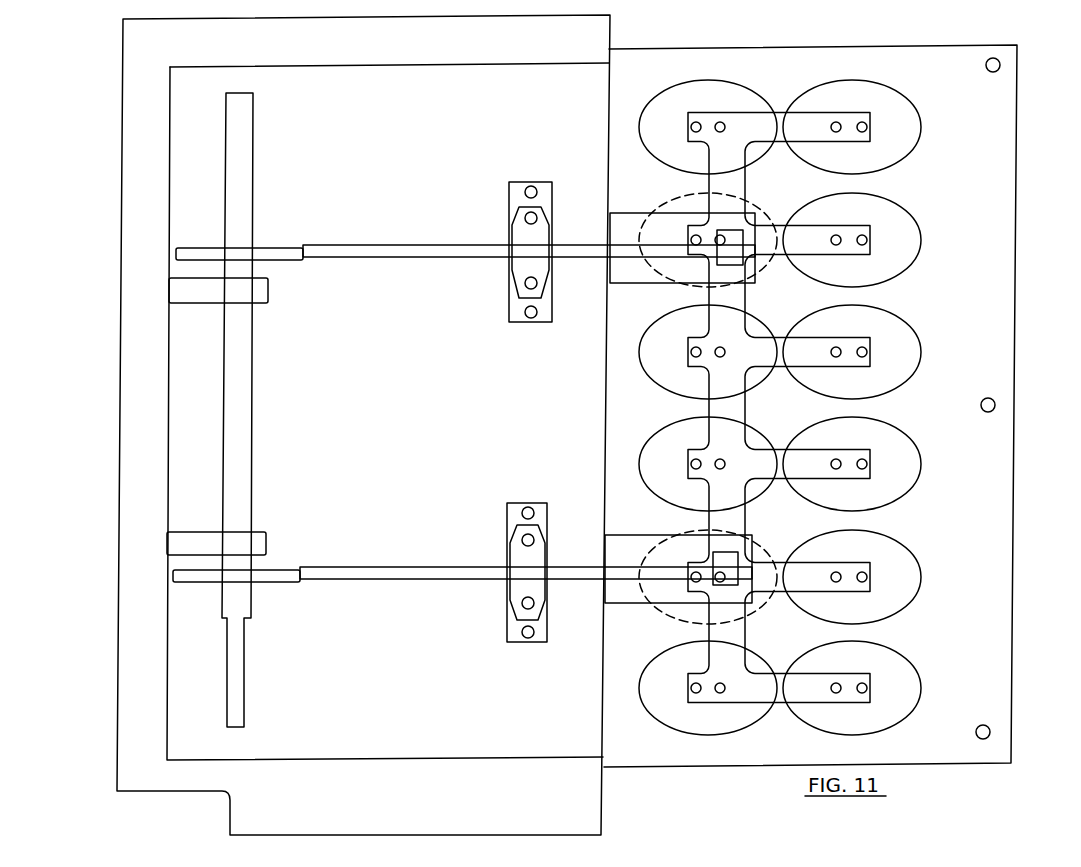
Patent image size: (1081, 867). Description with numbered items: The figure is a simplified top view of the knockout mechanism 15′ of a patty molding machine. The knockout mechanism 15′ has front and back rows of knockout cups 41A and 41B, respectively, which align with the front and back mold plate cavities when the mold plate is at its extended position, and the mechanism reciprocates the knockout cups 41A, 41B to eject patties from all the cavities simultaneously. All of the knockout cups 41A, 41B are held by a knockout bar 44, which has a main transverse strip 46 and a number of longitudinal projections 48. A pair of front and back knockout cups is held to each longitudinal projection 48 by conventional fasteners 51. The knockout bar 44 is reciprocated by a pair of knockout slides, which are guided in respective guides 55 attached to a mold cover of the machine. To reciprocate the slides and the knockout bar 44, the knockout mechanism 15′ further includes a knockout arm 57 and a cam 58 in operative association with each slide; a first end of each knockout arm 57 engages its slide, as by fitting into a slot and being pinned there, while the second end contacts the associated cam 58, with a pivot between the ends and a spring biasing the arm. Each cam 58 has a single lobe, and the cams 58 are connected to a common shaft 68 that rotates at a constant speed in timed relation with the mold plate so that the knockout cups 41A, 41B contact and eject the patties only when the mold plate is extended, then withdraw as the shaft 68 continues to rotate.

The knockout mechanism 15′ is at (922, 479).
The front knockout cups 41A is at (885, 345).
The back knockout cups 41B is at (658, 357).
The knockout bar 44 is at (876, 240).
The main transverse strip 46 is at (745, 180).
The longitudinal projections 48 is at (814, 120).
The fasteners 51 is at (701, 112).
The guides 55 is at (621, 225).
The knockout arm 57 is at (486, 256).
The cam 58 is at (194, 253).
The shaft 68 is at (243, 458).